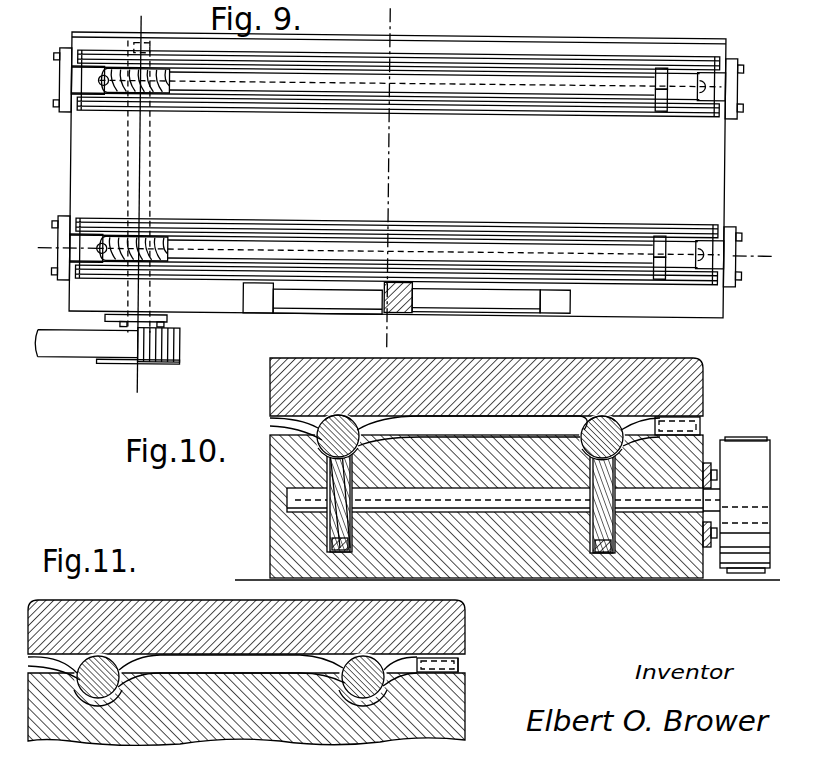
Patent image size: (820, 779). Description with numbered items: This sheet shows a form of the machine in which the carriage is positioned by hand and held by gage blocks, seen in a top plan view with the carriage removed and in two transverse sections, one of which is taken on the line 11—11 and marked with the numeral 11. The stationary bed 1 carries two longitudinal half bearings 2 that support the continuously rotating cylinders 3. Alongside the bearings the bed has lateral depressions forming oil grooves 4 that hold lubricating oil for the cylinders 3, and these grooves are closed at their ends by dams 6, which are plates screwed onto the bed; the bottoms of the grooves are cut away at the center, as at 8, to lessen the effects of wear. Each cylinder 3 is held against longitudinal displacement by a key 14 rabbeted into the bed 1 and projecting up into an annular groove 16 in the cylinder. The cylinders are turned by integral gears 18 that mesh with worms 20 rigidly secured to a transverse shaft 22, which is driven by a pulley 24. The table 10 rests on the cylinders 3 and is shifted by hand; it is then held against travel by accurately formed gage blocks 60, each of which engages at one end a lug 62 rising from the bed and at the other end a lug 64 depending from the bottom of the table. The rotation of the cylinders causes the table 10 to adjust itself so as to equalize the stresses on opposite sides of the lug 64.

In FIG. 9, the bed 1 is at (397, 159).
In FIG. 10, the bed 1 is at (525, 573).
In FIG. 11, the bed 1 is at (262, 720).
In FIG. 9, the half bearing 2 is at (715, 82).
In FIG. 10, the half bearing 2 is at (322, 443).
In FIG. 11, the half bearing 2 is at (132, 690).
In FIG. 9, the cylinder 3 is at (523, 78).
In FIG. 10, the cylinder 3 is at (330, 418).
In FIG. 11, the cylinder 3 is at (112, 658).
In FIG. 9, the oil groove 4 is at (465, 63).
In FIG. 10, the oil groove 4 is at (300, 435).
In FIG. 11, the oil groove 4 is at (52, 668).
In FIG. 9, the dam 6 is at (68, 87).
In FIG. 9, the cut-away bottom of groove 8 is at (46, 238).
In FIG. 9, the table 10 is at (160, 18).
In FIG. 10, the table 10 is at (486, 375).
In FIG. 11, the table 10 is at (450, 622).
In FIG. 9, the section line 11— 11 is at (405, 16).
In FIG. 9, the key 14 is at (656, 284).
In FIG. 9, the annular groove 16 is at (664, 66).
In FIG. 9, the gear 18 is at (125, 86).
In FIG. 10, the gear 18 is at (320, 430).
In FIG. 9, the worm 20 is at (188, 110).
In FIG. 10, the worm 20 is at (330, 533).
In FIG. 9, the transverse shaft 22 is at (170, 166).
In FIG. 10, the transverse shaft 22 is at (310, 497).
In FIG. 9, the pulley 24 is at (171, 362).
In FIG. 10, the pulley 24 is at (747, 548).
In FIG. 9, the gage block 60 is at (328, 300).
In FIG. 10, the gage block 60 is at (688, 418).
In FIG. 11, the gage block 60 is at (458, 670).
In FIG. 9, the lug 62 is at (262, 303).
In FIG. 10, the lug 62 is at (697, 427).
In FIG. 9, the lug 64 is at (414, 298).
In FIG. 11, the lug 64 is at (460, 663).